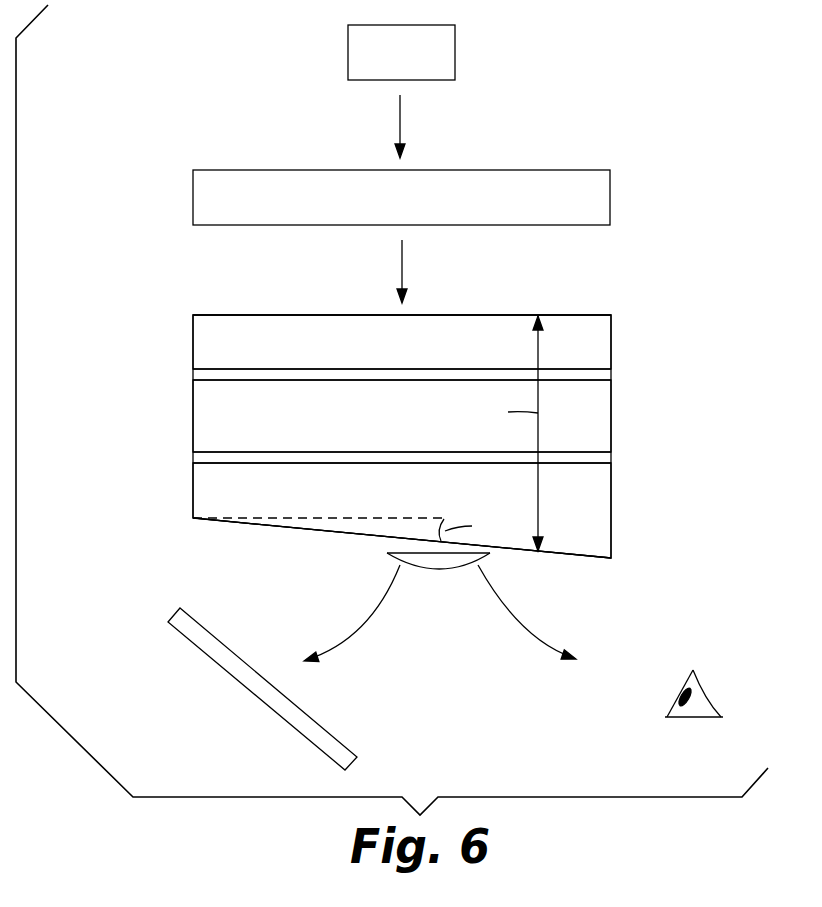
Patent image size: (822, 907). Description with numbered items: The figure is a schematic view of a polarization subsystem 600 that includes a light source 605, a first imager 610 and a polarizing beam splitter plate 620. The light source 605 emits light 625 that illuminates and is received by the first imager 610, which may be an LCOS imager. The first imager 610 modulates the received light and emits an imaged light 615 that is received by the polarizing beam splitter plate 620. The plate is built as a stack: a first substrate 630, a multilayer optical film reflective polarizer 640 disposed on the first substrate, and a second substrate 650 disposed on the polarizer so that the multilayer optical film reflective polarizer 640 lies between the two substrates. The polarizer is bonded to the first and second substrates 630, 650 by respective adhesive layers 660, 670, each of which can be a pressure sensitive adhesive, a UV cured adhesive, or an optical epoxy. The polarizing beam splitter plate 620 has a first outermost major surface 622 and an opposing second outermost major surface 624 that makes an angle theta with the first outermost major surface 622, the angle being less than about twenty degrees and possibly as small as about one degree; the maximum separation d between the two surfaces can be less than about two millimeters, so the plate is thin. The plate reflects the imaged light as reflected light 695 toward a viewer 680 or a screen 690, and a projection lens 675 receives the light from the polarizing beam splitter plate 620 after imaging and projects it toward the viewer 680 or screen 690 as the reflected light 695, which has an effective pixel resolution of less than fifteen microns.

The polarization subsystem 600 is at (636, 104).
The light source 605 is at (348, 50).
The light 625 is at (400, 116).
The first imager 610 is at (193, 197).
The imaged light 615 is at (401, 260).
The polarizing beam splitter plate 620 is at (453, 406).
The first outermost major surface 622 is at (589, 314).
The second outermost major surface 624 is at (345, 533).
The first substrate 630 is at (193, 342).
The multilayer optical film reflective polarizer 640 is at (193, 418).
The second substrate 650 is at (193, 492).
The adhesive layer 660 is at (611, 376).
The adhesive layer 670 is at (611, 456).
The projection lens 675 is at (440, 563).
The viewer 680 is at (698, 714).
The screen 690 is at (283, 706).
The reflected light 695 is at (521, 620).